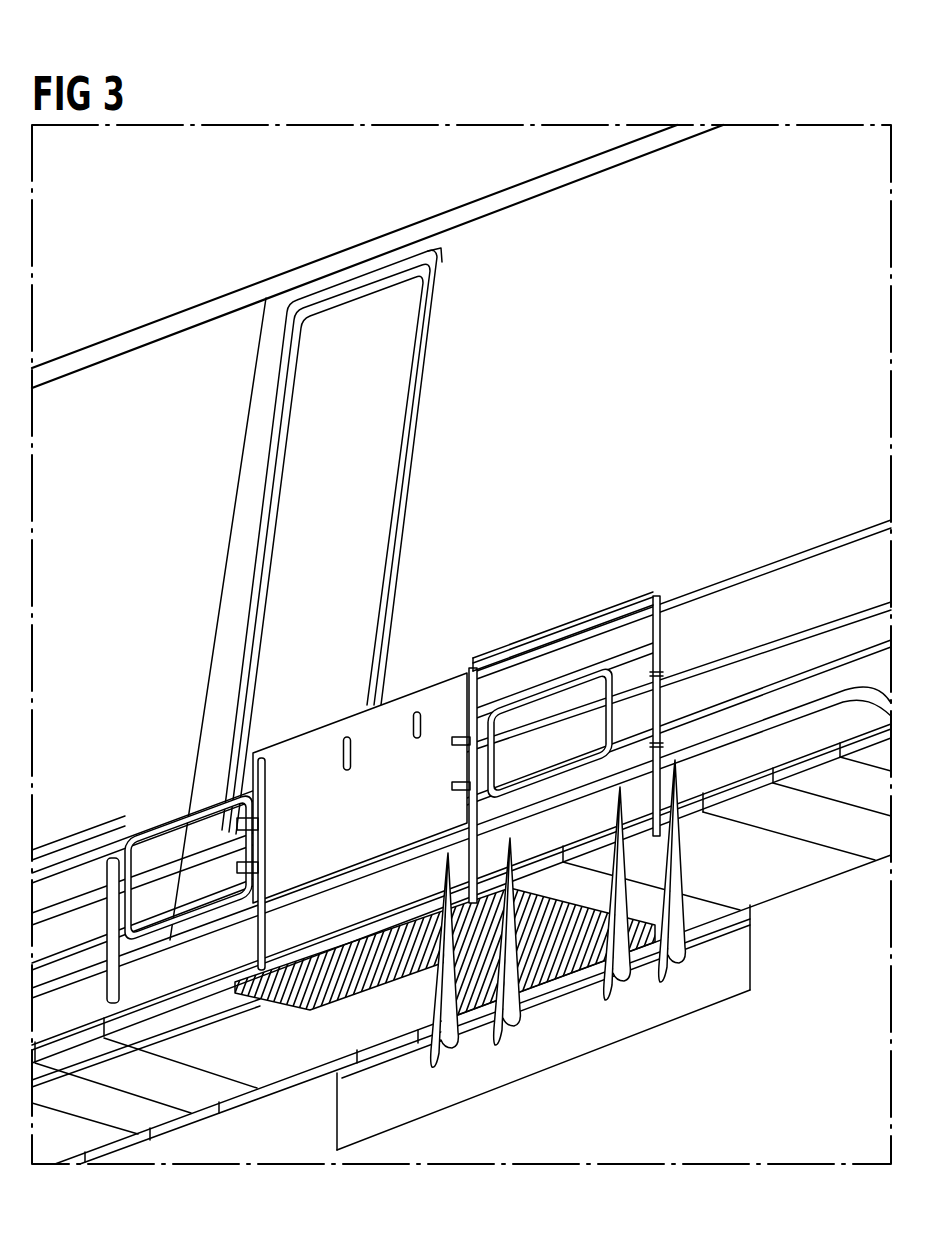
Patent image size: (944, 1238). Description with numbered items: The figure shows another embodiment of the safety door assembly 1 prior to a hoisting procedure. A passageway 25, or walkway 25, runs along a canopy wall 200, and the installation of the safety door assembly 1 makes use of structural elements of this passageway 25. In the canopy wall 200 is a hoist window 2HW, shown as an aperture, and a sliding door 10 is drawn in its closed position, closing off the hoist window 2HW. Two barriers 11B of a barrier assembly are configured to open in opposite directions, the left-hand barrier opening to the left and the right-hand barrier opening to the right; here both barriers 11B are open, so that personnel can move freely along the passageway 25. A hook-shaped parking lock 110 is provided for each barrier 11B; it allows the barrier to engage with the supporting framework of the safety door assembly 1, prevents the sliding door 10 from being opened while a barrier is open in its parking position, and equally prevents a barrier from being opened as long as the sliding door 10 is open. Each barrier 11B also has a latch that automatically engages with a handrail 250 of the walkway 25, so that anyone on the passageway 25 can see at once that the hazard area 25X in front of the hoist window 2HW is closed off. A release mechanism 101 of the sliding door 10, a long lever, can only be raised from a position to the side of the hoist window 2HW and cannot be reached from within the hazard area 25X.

The safety door assembly 1 is at (704, 457).
The canopy wall 200 is at (488, 232).
The hoist window 2HW is at (371, 516).
The sliding door 10 is at (312, 745).
The release mechanism 101 is at (627, 600).
The barrier 11B is at (563, 683).
The parking lock 110 is at (452, 742).
The handrail 250 is at (780, 717).
The passageway 25 is at (775, 903).
The hazard area 25X is at (550, 967).